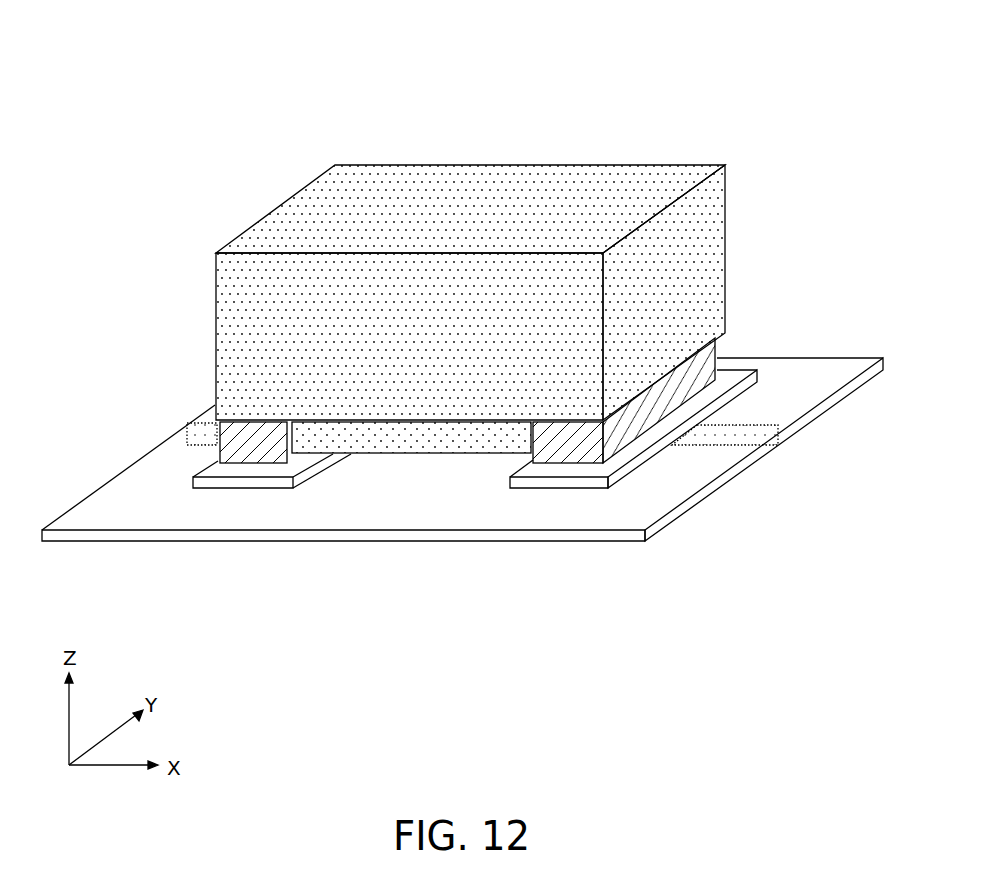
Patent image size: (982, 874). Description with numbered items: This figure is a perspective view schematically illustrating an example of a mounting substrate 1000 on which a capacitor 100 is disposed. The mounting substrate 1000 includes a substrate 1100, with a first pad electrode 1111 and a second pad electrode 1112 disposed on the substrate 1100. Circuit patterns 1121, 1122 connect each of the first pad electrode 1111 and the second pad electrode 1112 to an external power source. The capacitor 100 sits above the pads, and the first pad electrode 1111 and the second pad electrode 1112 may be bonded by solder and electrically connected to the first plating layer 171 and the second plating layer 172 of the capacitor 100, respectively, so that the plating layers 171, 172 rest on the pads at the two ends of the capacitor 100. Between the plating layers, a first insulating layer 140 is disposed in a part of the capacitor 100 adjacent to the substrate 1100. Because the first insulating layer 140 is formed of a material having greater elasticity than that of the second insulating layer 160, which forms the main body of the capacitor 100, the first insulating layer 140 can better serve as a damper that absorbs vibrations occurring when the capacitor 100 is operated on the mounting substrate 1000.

The mounting substrate 1000 is at (366, 36).
The capacitor 100 is at (457, 327).
The second insulating layer 160 is at (512, 190).
The first plating layer 171 is at (215, 463).
The second plating layer 172 is at (730, 358).
The first insulating layer 140 is at (393, 437).
The substrate 1100 is at (476, 512).
The first pad electrode 1111 is at (260, 471).
The second pad electrode 1112 is at (577, 472).
The circuit pattern 1121 is at (187, 428).
The circuit pattern 1122 is at (745, 446).